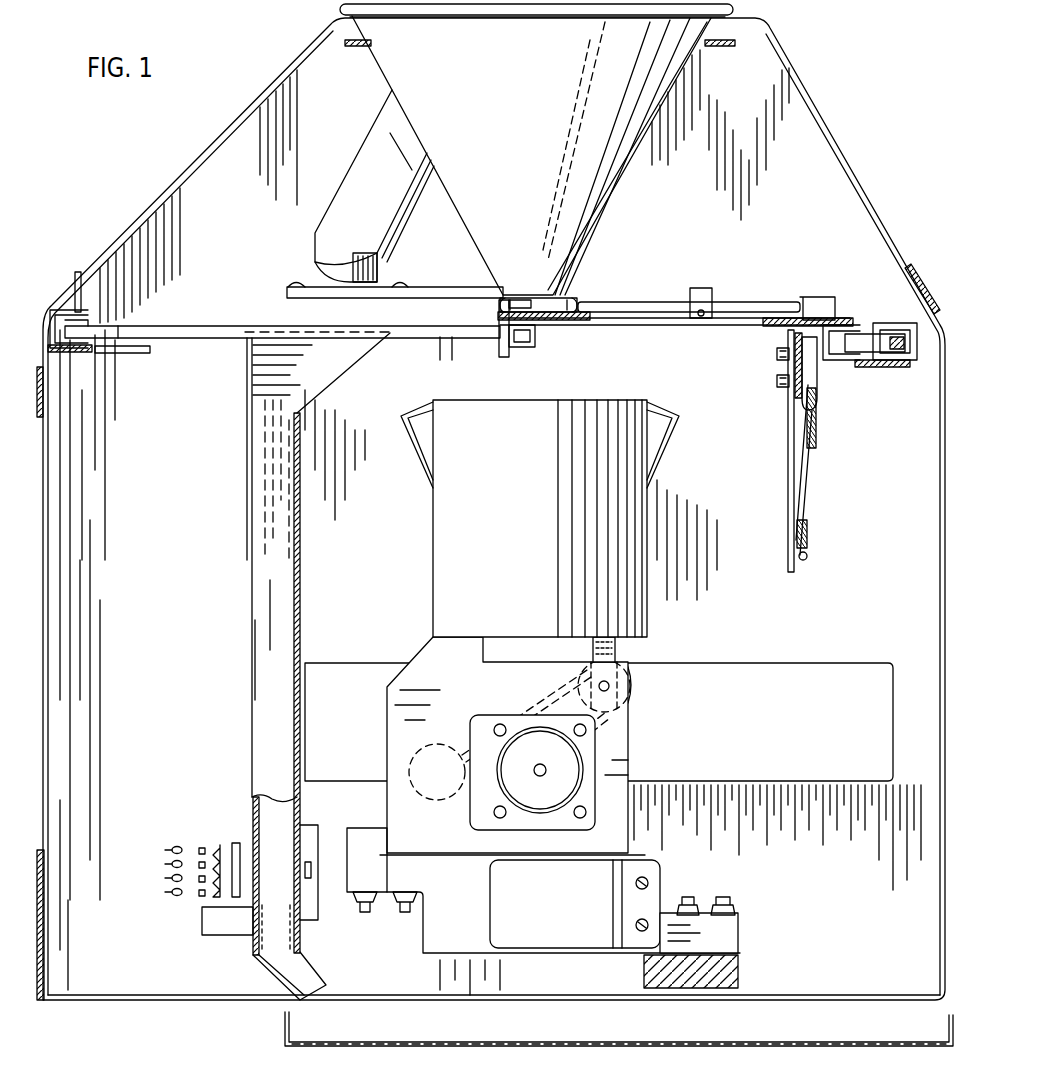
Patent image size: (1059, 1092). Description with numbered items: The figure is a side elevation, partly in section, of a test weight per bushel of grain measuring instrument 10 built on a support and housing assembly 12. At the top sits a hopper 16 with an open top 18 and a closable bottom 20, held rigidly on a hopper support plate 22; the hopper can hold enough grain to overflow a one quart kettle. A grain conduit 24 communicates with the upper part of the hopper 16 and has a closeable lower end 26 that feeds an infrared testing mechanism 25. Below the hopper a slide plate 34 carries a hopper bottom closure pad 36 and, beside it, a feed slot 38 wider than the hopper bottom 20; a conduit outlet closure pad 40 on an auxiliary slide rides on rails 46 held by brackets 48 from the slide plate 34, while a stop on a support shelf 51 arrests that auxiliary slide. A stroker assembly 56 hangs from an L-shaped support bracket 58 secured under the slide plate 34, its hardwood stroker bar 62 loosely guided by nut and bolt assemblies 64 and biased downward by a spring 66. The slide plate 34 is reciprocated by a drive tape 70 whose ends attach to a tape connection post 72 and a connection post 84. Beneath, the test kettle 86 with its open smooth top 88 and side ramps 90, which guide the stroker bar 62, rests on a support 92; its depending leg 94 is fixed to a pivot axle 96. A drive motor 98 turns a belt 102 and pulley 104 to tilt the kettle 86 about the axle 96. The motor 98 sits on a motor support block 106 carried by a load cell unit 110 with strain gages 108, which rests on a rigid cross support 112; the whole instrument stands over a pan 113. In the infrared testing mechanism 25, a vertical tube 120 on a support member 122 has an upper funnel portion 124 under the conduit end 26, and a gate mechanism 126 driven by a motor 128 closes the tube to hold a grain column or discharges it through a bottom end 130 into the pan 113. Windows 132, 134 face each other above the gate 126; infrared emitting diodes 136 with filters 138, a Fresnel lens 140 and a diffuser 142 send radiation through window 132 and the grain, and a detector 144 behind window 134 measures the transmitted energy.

The test weight per bushel of grain measuring instrument 10 is at (491, 509).
The support and housing assembly 12 is at (895, 250).
The hopper 16 is at (568, 156).
The open top 18 is at (735, 10).
The closable bottom 20 is at (575, 288).
The hopper support plate 22 is at (722, 46).
The grain conduit 24 is at (349, 186).
The infrared testing mechanism 25 is at (180, 886).
The closeable bottom or lower end 26 is at (322, 275).
The slide plate 34 is at (457, 362).
The hopper bottom closure pad 36 is at (600, 312).
The feed slot or cutout 38 is at (763, 324).
The conduit outlet closure pad 40 is at (393, 280).
The rails 46 is at (706, 285).
The brackets 48 is at (714, 283).
The support shelf 51 is at (83, 357).
The stroker assembly 56 is at (772, 382).
The L-shaped support bracket 58 is at (780, 330).
The stroker bar 62 is at (820, 402).
The nut and bolt assemblies 64 is at (815, 383).
The spring 66 is at (813, 495).
The drive tape 70 is at (445, 350).
The tape connection post 72 is at (535, 365).
The connection post 84 is at (853, 332).
The test kettle 86 is at (488, 385).
The open smooth top 88 is at (540, 501).
The ramps 90 is at (410, 406).
The support 92 is at (420, 652).
The depending leg 94 is at (612, 655).
The pivot axle 96 is at (612, 690).
The drive motor 98 is at (570, 778).
The belt 102 is at (510, 695).
The pulley 104 is at (635, 683).
The motor support block 106 is at (372, 905).
The strain gages 108 is at (630, 875).
The load cell unit 110 is at (743, 930).
The rigid cross support 112 is at (740, 980).
The pan 113 is at (283, 1025).
The vertical tube 120 is at (188, 619).
The support member 122 is at (303, 666).
The upper funnel portion 124 is at (265, 365).
The gate, valve or other discharge mechanism 126 is at (262, 950).
The motor 128 is at (215, 930).
The bottom end 130 is at (322, 985).
The window 132 is at (262, 860).
The window 134 is at (288, 860).
The infrared emitting diodes 136 is at (168, 868).
The filters 138 is at (200, 890).
The Fresnel lens 140 is at (215, 843).
The diffuser 142 is at (236, 840).
The detector 144 is at (312, 870).